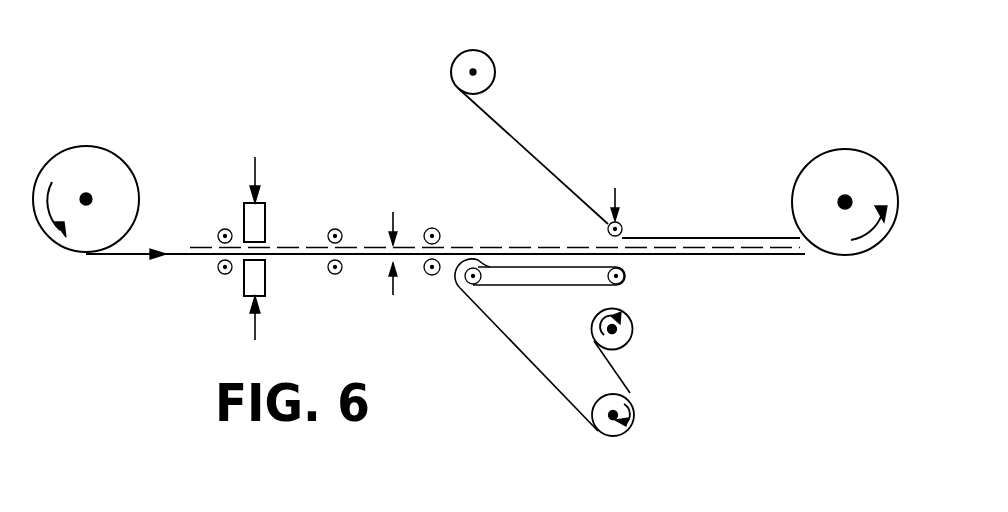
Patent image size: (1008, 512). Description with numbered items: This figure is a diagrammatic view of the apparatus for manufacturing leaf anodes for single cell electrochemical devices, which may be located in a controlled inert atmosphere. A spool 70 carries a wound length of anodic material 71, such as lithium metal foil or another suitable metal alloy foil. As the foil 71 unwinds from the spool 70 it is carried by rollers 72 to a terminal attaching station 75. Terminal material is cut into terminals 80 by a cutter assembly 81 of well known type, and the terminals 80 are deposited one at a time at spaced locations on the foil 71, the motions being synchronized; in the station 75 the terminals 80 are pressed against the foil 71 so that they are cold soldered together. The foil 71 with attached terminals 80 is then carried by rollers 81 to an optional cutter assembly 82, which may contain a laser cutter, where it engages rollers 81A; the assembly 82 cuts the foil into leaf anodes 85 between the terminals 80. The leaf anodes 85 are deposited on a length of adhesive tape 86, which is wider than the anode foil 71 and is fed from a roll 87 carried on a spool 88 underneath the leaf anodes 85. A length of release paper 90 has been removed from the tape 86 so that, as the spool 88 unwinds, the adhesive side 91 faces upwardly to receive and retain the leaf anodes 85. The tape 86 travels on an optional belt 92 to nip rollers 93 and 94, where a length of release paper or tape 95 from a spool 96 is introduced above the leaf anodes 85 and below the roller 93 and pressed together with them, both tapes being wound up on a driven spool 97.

The spool 70 is at (107, 173).
The anodic material 71 is at (180, 255).
The rollers 72 is at (225, 274).
The terminal attaching station 75 is at (306, 185).
The terminals 80 is at (202, 247).
The cutter assembly 81 is at (330, 230).
The rollers 81A is at (439, 232).
The cutter assembly 82 is at (443, 203).
The leaf anodes 85 is at (408, 259).
The adhesive tape 86 is at (500, 335).
The roll 87 is at (606, 431).
The spool 88 is at (632, 420).
The release paper 90 is at (613, 366).
The adhesive side 91 is at (540, 373).
The belt 92 is at (550, 286).
The nip roller 93 is at (622, 222).
The nip roller 94 is at (625, 282).
The release paper or tape 95 is at (523, 148).
The spool 96 is at (480, 65).
The driven spool 97 is at (867, 170).